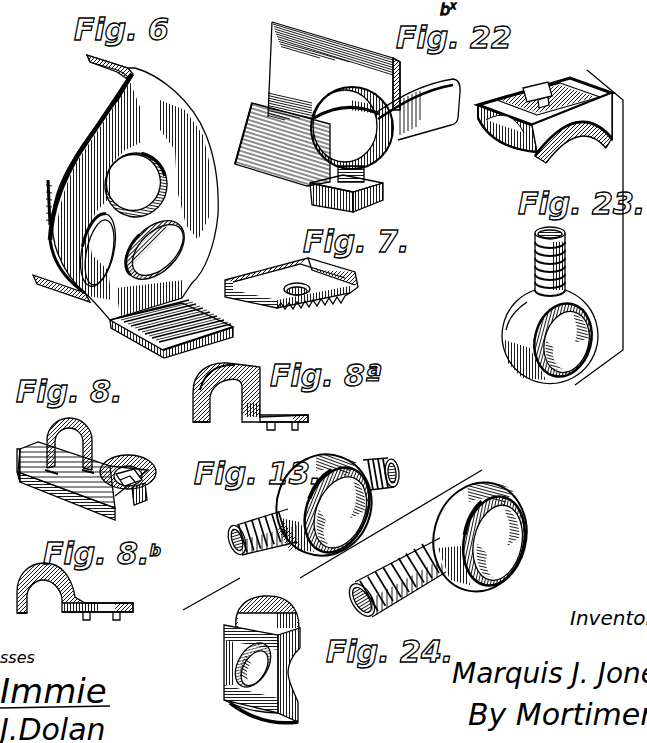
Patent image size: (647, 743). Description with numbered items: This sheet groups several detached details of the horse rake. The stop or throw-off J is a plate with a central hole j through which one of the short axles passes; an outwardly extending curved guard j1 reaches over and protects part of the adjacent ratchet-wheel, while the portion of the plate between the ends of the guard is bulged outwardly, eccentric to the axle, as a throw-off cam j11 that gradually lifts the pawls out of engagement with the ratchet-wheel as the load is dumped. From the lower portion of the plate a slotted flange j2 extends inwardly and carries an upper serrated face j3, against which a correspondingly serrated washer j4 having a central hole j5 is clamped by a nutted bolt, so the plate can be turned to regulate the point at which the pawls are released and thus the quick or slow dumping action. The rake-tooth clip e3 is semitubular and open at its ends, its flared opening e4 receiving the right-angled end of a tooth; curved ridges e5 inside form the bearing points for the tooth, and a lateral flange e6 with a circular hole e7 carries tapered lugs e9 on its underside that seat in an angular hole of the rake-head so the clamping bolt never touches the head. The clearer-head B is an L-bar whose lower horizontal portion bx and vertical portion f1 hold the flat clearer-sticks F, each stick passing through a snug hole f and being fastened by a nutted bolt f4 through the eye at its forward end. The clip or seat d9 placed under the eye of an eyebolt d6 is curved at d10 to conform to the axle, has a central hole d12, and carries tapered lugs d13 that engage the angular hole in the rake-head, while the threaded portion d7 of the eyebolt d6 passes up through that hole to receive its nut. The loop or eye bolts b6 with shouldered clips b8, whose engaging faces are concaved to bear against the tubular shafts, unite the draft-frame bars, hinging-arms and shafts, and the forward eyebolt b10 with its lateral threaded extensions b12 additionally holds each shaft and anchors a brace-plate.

In FIG. 6, the stop or throw-off J is at (122, 187).
In FIG. 6, the central hole j is at (146, 164).
In FIG. 6, the throw-off cam j11 is at (50, 238).
In FIG. 6, the curved guard j1 is at (66, 289).
In FIG. 6, the slotted flange j2 is at (152, 333).
In FIG. 6, the serrated face j3 is at (181, 348).
In FIG. 7, the serrated washer j4 is at (291, 280).
In FIG. 7, the central hole j5 is at (318, 300).
In FIG. 22, the clearer-head B is at (314, 71).
In FIG. 22, the lower horizontal portion bx is at (275, 144).
In FIG. 22, the nutted bolt f4 is at (332, 95).
In FIG. 22, the vertical portion f1 is at (409, 60).
In FIG. 22, the hole f is at (419, 81).
In FIG. 22, the clearer-stick F is at (418, 117).
In FIG. 22, the hole d12 is at (538, 90).
In FIG. 22, the tapered lugs d13 is at (527, 93).
In FIG. 22, the clip or seat d9 is at (507, 145).
In FIG. 22, the curved lower surface d10 is at (573, 150).
In FIG. 23, the threaded portion d7 is at (564, 252).
In FIG. 23, the eyebolt d6 is at (551, 328).
In FIG. 8, the rake-tooth clip e3 is at (82, 476).
In FIG. 8A, the rake-tooth clip e3 is at (240, 392).
In FIG. 8B, the rake-tooth clip e3 is at (75, 588).
In FIG. 8, the opening e4 is at (82, 428).
In FIG. 8A, the opening e4 is at (218, 370).
In FIG. 8, the curved ridges e5 is at (55, 485).
In FIG. 8A, the curved ridges e5 is at (210, 422).
In FIG. 8B, the curved ridges e5 is at (32, 612).
In FIG. 8, the lateral flange e6 is at (140, 467).
In FIG. 8A, the lateral flange e6 is at (310, 412).
In FIG. 8B, the lateral flange e6 is at (133, 604).
In FIG. 8, the tapered lugs e9 is at (143, 483).
In FIG. 8A, the tapered lugs e9 is at (300, 430).
In FIG. 8B, the tapered lugs e9 is at (117, 618).
In FIG. 8, the circular hole e7 is at (145, 493).
In FIG. 8B, the circular hole e7 is at (103, 617).
In FIG. 13, the forward eyebolt b10 is at (285, 500).
In FIG. 13, the lateral threaded extensions b12 is at (258, 554).
In FIG. 13, the loop or eye bolt b6 is at (441, 545).
In FIG. 24, the shouldered clip b8 is at (295, 614).